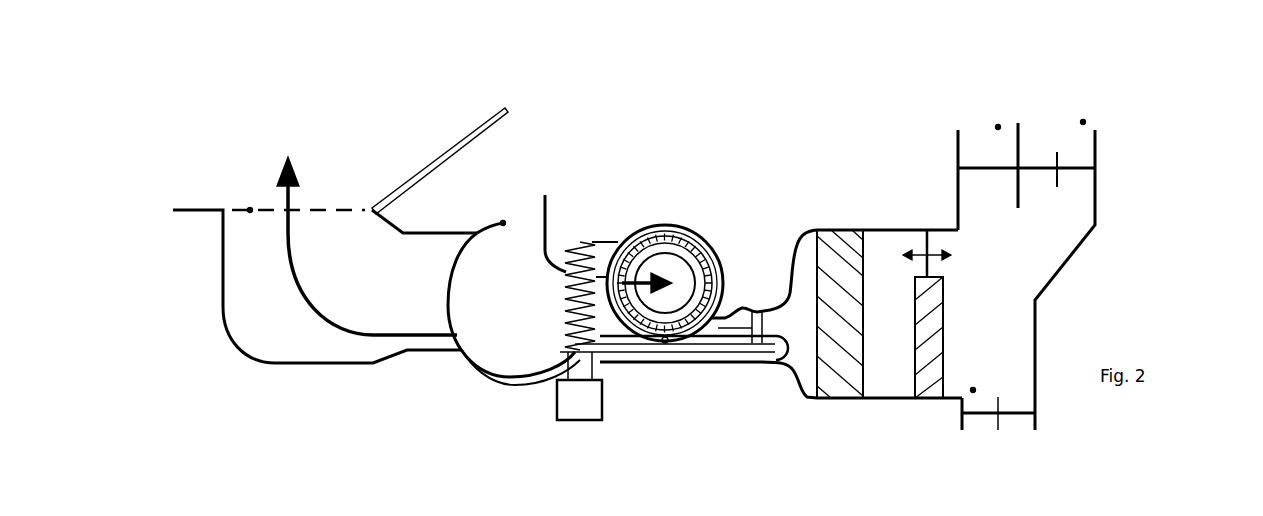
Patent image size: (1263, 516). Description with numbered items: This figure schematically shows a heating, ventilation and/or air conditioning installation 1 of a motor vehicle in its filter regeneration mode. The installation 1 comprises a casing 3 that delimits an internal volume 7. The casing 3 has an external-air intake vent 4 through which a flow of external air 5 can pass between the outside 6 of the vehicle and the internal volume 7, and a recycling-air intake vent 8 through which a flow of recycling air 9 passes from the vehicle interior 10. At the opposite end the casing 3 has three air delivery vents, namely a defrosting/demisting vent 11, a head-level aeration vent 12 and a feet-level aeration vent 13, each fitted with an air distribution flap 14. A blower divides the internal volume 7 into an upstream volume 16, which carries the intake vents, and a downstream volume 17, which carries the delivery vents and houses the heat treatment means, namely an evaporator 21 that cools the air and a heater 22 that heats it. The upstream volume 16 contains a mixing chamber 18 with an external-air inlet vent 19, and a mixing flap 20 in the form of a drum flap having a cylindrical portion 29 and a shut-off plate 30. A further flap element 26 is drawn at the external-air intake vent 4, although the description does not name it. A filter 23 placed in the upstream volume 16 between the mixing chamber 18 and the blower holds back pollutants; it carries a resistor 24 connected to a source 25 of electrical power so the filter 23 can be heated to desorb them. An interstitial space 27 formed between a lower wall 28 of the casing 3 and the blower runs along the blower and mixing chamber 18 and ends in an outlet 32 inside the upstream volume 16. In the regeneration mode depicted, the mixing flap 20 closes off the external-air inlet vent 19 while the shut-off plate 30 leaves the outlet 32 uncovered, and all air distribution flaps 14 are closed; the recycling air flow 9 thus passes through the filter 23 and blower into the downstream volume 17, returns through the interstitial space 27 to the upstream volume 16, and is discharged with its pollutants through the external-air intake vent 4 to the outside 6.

The heating, ventilation and/or air conditioning installation 1 is at (822, 186).
The casing 3 is at (222, 268).
The external-air intake vent 4 is at (250, 208).
The flow of external air 5 is at (724, 335).
The outside 6 is at (273, 178).
The internal volume 7 is at (687, 293).
The recycling-air intake vent 8 is at (503, 223).
The flow of recycling air 9 is at (548, 197).
The vehicle interior 10 is at (727, 137).
The defrosting/demisting vent 11 is at (973, 390).
The head-level aeration vent 12 is at (998, 126).
The feet-level aeration vent 13 is at (1083, 122).
The air distribution flap 14 is at (972, 175).
The upstream volume 16 is at (281, 283).
The downstream volume 17 is at (904, 320).
The mixing chamber 18 is at (536, 300).
The external-air inlet vent 19 is at (478, 308).
The mixing flap 20 is at (476, 248).
The evaporator 21 is at (841, 226).
The heater 22 is at (950, 305).
The filter 23 is at (591, 240).
The resistor 24 is at (572, 238).
The source of electrical power 25 is at (589, 410).
The inlet flap 26 is at (358, 200).
The interstitial space 27 is at (642, 362).
The wall 28 is at (708, 365).
The cylindrical portion 29 is at (478, 336).
The shut-off plate 30 is at (447, 332).
The outlet 32 is at (454, 356).